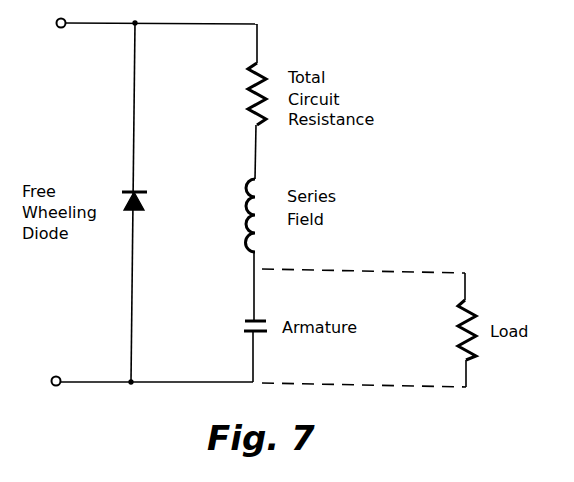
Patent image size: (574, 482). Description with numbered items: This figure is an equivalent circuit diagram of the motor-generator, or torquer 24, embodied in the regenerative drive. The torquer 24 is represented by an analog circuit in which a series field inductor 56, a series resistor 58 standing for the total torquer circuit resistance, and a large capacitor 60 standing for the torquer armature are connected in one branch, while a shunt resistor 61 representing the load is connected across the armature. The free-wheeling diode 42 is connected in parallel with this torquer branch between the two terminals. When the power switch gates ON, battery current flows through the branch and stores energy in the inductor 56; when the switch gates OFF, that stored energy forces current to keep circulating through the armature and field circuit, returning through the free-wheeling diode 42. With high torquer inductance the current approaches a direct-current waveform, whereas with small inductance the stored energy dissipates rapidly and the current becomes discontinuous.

The torquer 24 is at (422, 200).
The free-wheeling diode 42 is at (137, 209).
The inductor 56 is at (243, 210).
The series resistor 58 is at (248, 91).
The capacitor 60 is at (247, 330).
The shunt resistor 61 is at (470, 305).